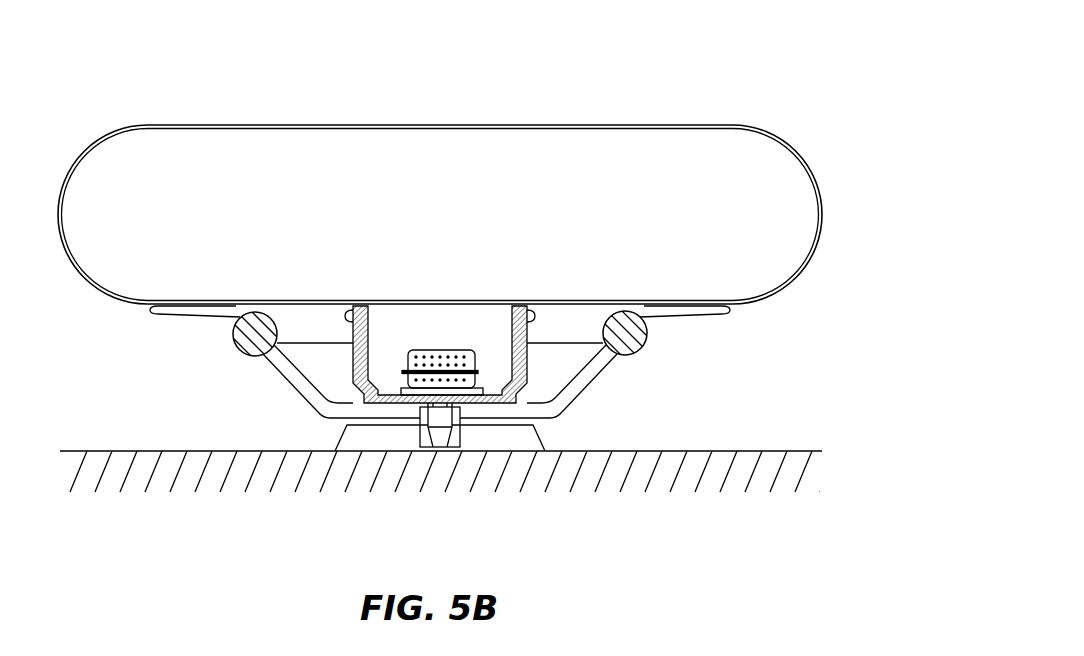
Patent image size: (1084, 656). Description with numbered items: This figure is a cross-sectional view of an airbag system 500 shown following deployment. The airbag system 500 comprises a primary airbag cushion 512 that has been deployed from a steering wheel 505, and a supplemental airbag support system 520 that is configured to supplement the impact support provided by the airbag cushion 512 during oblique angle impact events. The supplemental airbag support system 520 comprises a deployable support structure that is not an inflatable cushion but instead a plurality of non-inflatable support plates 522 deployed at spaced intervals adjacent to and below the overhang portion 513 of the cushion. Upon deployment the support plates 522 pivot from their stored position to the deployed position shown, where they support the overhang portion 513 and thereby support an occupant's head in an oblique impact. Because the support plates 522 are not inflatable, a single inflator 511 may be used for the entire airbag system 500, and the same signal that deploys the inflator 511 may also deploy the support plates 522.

The airbag system 500 is at (620, 83).
The primary airbag cushion 512 is at (320, 125).
The overhang portion 513 is at (225, 302).
The inflator 511 is at (440, 350).
The support plates 522 is at (180, 314).
The steering wheel 505 is at (233, 333).
The supplemental airbag support system 520 is at (700, 345).